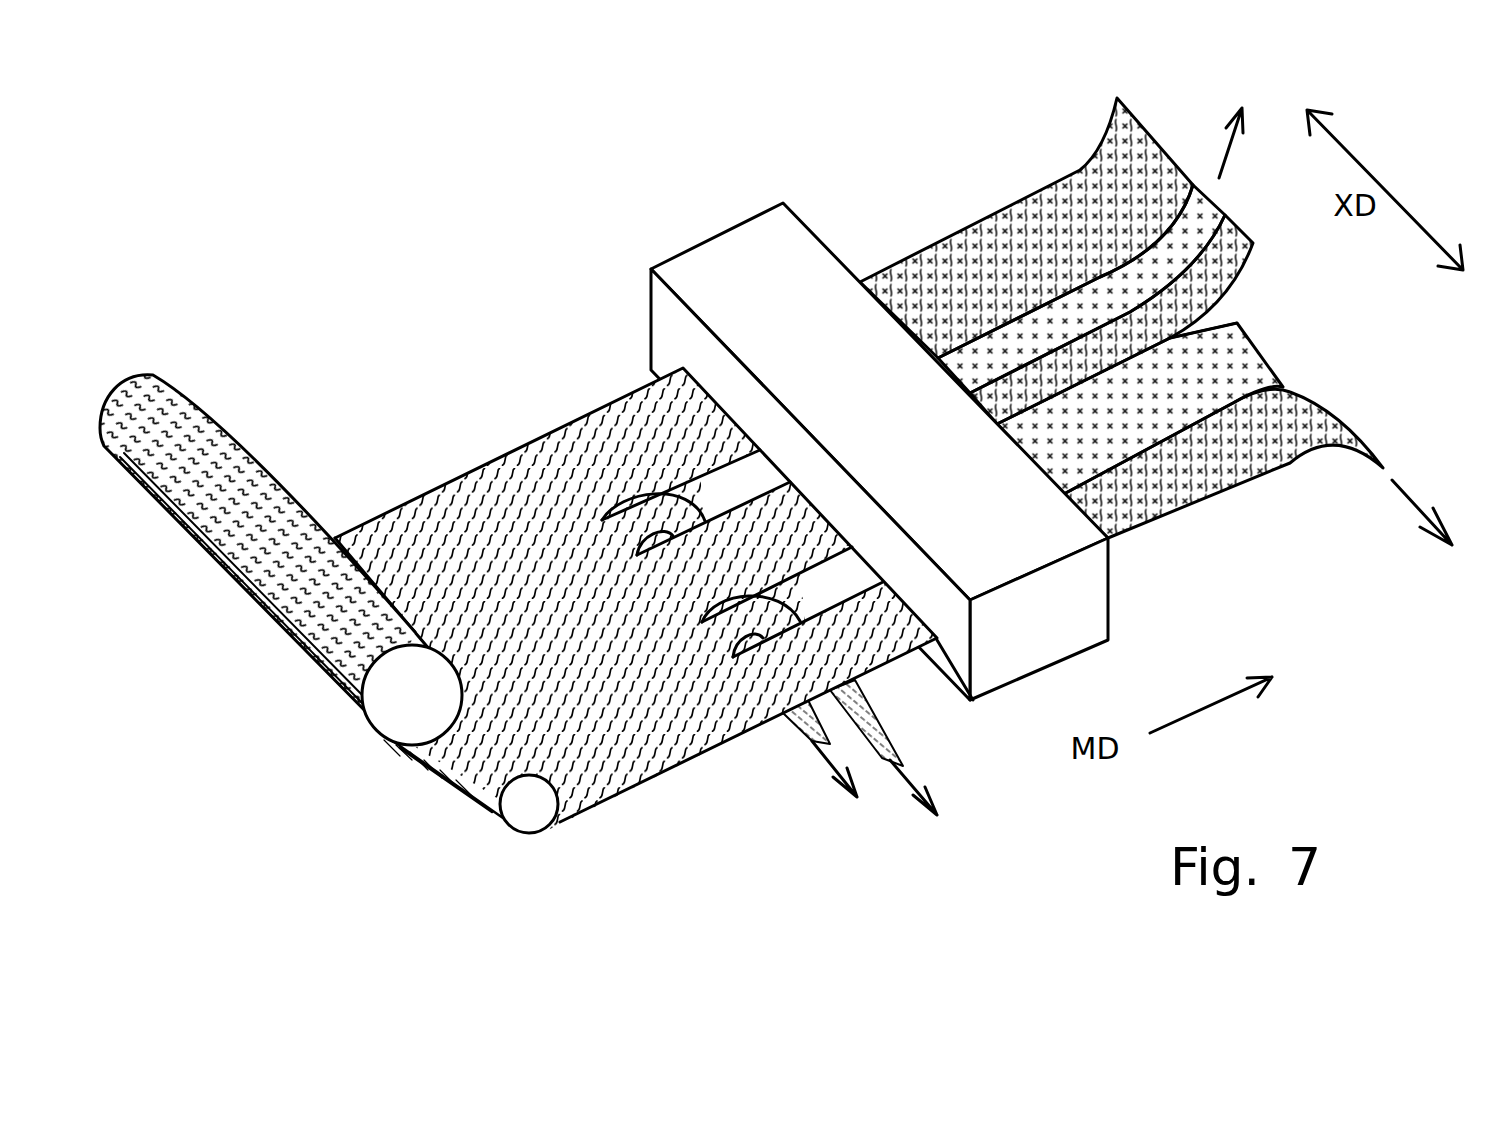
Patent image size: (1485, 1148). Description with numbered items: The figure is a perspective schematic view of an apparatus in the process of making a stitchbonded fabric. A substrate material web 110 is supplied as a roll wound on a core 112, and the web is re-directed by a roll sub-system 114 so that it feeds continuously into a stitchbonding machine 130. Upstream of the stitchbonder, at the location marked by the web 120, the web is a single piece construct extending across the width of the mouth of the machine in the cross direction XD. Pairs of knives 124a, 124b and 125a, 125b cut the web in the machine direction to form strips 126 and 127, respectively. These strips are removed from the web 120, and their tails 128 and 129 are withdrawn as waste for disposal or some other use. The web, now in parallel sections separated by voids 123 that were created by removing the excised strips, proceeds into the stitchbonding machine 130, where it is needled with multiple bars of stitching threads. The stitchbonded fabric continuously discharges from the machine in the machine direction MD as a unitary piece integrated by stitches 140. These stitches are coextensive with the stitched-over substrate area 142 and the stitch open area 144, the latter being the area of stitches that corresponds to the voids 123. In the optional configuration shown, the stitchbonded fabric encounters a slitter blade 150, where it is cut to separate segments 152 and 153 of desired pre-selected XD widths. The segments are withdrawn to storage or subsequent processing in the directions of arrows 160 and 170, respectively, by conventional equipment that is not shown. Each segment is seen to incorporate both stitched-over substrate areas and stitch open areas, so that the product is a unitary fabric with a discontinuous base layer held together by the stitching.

The substrate material web 110 is at (233, 425).
The core 112 is at (398, 728).
The roll sub-system 114 is at (480, 805).
The web upstream of the stitchbonder 120 is at (676, 595).
The voids 123 is at (667, 595).
The knife 124a is at (615, 450).
The knife 124b is at (700, 545).
The knife 125a is at (704, 620).
The knife 125b is at (830, 596).
The strip 126 is at (672, 495).
The strip 127 is at (738, 640).
The tail 128 is at (785, 728).
The tail 129 is at (914, 747).
The stitchbonding machine 130 is at (725, 260).
The stitches 140 is at (1134, 308).
The stitched-over substrate area 142 is at (1142, 308).
The stitch open area 144 is at (962, 308).
The slitter blade 150 is at (1217, 318).
The segment 152 is at (1103, 182).
The segment 153 is at (1283, 382).
The arrow 160 is at (1220, 160).
The arrow 170 is at (1412, 503).